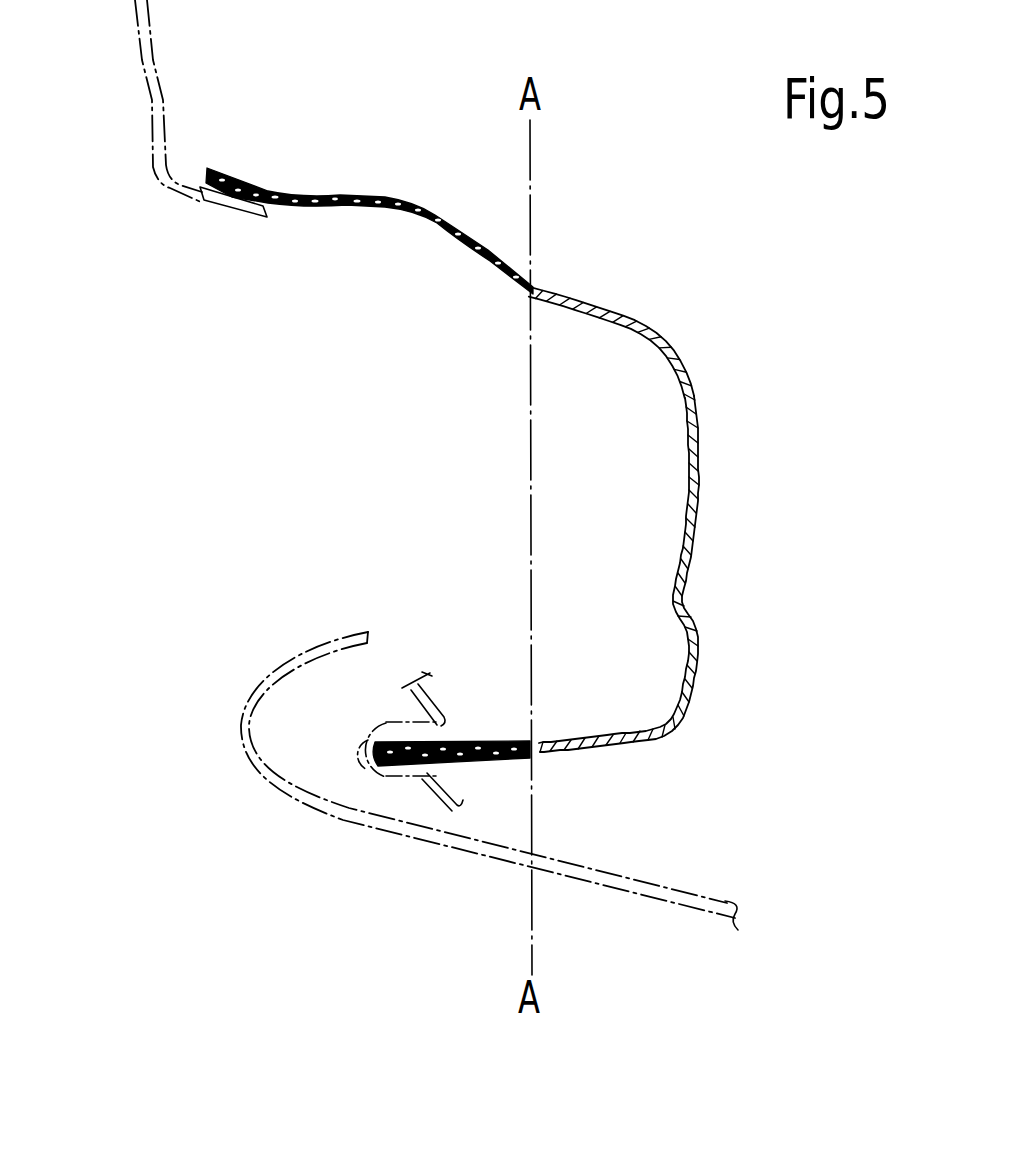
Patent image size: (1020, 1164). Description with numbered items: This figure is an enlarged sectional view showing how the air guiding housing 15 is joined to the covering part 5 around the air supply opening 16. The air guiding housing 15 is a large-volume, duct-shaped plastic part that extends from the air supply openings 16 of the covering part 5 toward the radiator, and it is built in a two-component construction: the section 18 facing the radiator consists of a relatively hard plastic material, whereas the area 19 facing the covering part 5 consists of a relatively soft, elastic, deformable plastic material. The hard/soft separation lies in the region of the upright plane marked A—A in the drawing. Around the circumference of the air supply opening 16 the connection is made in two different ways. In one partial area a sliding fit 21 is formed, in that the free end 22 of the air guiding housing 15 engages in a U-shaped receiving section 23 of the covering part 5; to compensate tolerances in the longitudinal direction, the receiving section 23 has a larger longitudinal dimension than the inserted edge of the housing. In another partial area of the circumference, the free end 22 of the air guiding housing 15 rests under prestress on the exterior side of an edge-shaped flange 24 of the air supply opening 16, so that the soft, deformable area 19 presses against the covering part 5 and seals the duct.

The covering part 5 is at (147, 82).
The air guiding housing 15 is at (702, 443).
The air supply opening 16 is at (342, 368).
The section 18 is at (610, 307).
The area 19 is at (448, 230).
The sliding fit 21 is at (208, 210).
The free end 22 is at (218, 177).
The U-shaped receiving section 23 is at (393, 777).
The edge-shaped flange 24 is at (250, 215).